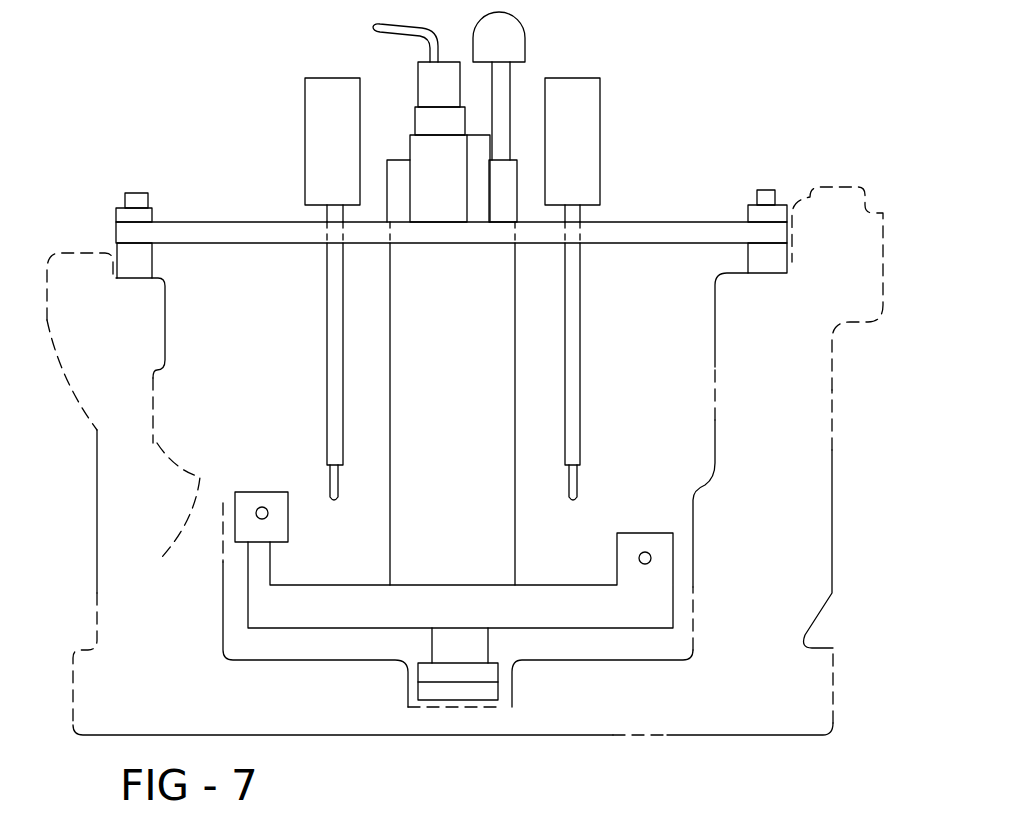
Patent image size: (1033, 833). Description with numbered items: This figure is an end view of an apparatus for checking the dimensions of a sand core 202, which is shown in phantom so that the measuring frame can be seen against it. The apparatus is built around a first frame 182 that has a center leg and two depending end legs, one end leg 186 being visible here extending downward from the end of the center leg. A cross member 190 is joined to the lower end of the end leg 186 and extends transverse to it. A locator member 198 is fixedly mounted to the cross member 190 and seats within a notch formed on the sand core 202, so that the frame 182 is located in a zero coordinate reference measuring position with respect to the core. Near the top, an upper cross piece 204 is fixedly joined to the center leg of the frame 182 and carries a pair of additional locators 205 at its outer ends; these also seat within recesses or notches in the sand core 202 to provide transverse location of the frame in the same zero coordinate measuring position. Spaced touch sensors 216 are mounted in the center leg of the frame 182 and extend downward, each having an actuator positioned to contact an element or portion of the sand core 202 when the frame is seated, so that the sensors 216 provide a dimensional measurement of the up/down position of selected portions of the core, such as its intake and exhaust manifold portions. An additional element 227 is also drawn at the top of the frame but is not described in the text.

The first frame 182 is at (272, 200).
The end leg 186 is at (460, 418).
The cross member 190 is at (613, 615).
The locator member 198 is at (487, 690).
The sand core 202 is at (223, 505).
The upper cross piece 204 is at (227, 230).
The additional locators 205 is at (118, 217).
The touch sensors 216 is at (330, 347).
The probe 227 is at (502, 87).